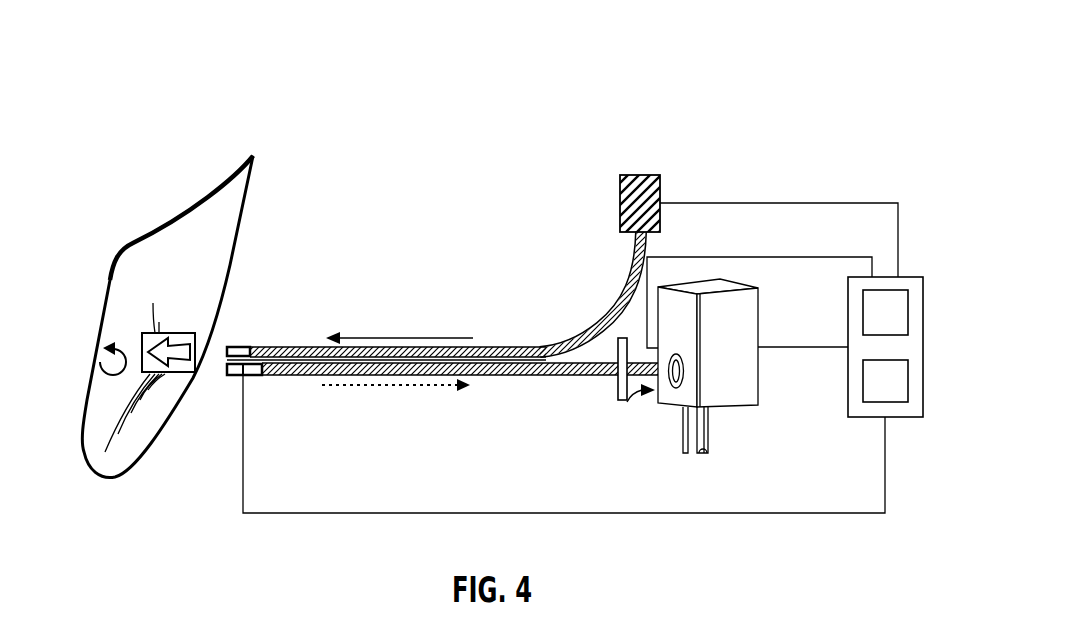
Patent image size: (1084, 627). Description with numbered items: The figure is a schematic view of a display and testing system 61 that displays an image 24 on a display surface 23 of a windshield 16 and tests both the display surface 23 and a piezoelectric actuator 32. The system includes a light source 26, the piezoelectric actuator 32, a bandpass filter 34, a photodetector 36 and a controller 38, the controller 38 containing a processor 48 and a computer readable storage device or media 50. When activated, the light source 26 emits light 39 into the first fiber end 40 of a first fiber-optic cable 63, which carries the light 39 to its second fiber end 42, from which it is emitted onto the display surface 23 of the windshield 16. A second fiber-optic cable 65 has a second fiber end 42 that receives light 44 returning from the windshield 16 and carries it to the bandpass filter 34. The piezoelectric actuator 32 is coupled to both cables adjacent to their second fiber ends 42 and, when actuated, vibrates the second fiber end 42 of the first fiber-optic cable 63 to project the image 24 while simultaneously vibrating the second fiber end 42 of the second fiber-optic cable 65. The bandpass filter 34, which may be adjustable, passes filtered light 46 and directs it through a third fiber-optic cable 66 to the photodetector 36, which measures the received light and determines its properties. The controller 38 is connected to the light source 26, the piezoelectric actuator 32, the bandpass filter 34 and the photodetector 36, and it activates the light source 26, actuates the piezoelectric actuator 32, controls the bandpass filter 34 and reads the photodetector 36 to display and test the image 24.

The display and testing system 61 is at (698, 54).
The windshield 16 is at (228, 205).
The image 24 is at (142, 333).
The display surface 23 is at (100, 362).
The second fiber end 42 is at (257, 347).
The piezoelectric actuator 32 is at (246, 376).
The light 39 is at (400, 338).
The light 44 is at (393, 387).
The first fiber-optic cable 63 is at (497, 347).
The second fiber-optic cable 65 is at (507, 376).
The first fiber end 40 is at (633, 238).
The light source 26 is at (638, 175).
The bandpass filter 34 is at (617, 390).
The filtered light 46 is at (627, 402).
The third fiber-optic cable 66 is at (665, 400).
The photodetector 36 is at (730, 392).
The controller 38 is at (906, 366).
The computer readable storage device or media 50 is at (872, 327).
The processor 48 is at (872, 395).